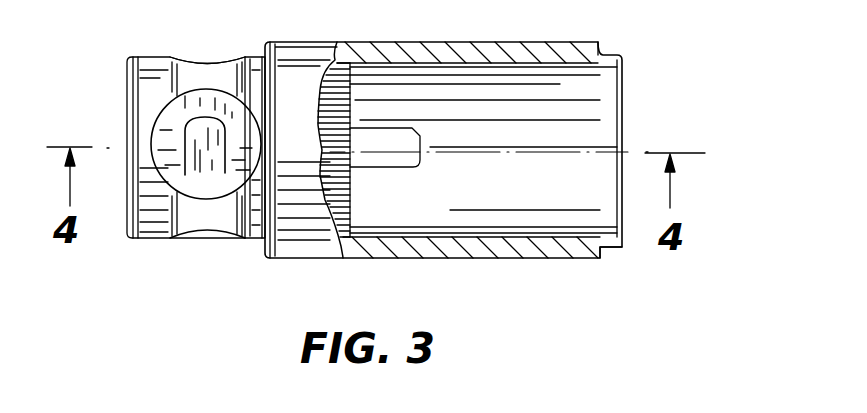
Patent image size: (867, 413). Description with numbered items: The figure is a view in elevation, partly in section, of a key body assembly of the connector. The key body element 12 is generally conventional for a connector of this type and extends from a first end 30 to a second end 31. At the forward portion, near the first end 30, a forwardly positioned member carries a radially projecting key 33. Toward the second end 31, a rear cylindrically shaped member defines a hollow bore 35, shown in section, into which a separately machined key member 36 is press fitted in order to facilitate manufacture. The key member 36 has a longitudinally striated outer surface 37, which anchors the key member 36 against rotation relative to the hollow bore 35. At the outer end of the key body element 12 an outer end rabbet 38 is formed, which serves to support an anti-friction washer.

The key body element 12 is at (440, 44).
The first end 30 is at (127, 238).
The second end 31 is at (627, 255).
The radially projecting key 33 is at (210, 176).
The hollow bore 35 is at (612, 90).
The key member 36 is at (348, 213).
The longitudinally striated outer surface 37 is at (350, 192).
The outer end rabbet 38 is at (605, 50).